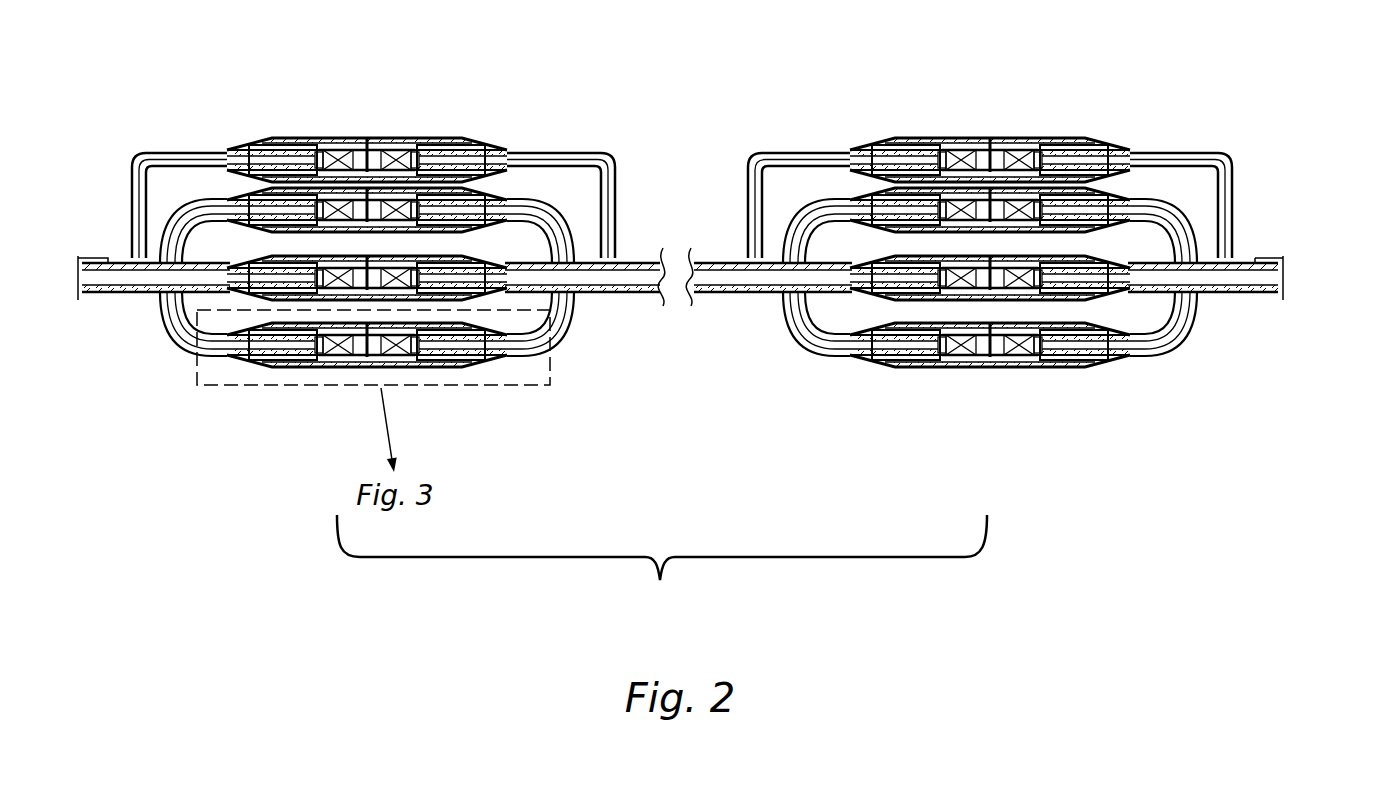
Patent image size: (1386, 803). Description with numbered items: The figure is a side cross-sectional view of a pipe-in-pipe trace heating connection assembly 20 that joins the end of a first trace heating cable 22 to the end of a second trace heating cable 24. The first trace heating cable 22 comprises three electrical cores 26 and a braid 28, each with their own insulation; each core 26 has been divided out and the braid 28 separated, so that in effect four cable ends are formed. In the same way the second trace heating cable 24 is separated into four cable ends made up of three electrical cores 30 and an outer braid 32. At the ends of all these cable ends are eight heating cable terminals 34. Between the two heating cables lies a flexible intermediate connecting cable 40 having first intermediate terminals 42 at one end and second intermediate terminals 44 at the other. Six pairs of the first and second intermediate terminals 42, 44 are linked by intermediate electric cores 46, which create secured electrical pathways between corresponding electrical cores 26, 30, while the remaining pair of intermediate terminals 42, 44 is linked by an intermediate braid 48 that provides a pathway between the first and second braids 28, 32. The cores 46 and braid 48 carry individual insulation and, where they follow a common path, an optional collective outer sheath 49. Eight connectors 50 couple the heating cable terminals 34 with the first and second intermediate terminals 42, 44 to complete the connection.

The pipe-in-pipe trace heating connection assembly 20 is at (296, 588).
The first trace heating cable 22 is at (90, 293).
The second trace heating cable 24 is at (1282, 262).
The electrical cores 26 is at (213, 268).
The braid 28 is at (143, 157).
The electrical cores 30 is at (1150, 275).
The outer braid 32 is at (1220, 153).
The heating cable terminals 34 is at (357, 155).
The flexible intermediate connecting cable 40 is at (663, 575).
The first intermediate terminals 42 is at (393, 155).
The second intermediate terminals 44 is at (965, 350).
The intermediate electric cores 46 is at (565, 237).
The intermediate braid 48 is at (760, 157).
The collective outer sheath 49 is at (667, 298).
The connectors 50 is at (305, 140).